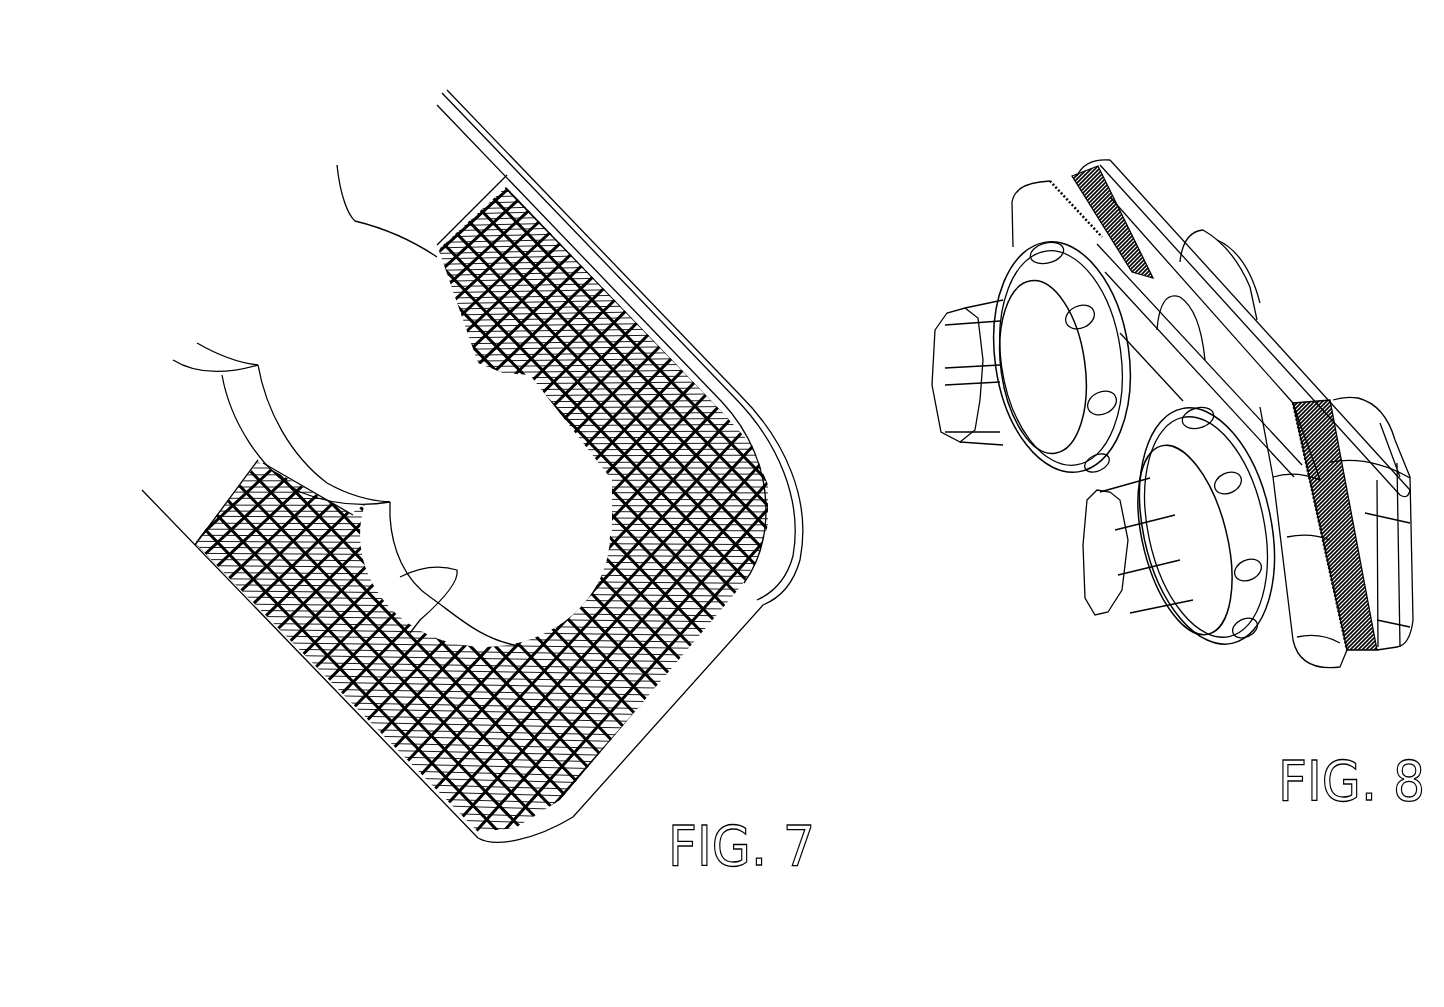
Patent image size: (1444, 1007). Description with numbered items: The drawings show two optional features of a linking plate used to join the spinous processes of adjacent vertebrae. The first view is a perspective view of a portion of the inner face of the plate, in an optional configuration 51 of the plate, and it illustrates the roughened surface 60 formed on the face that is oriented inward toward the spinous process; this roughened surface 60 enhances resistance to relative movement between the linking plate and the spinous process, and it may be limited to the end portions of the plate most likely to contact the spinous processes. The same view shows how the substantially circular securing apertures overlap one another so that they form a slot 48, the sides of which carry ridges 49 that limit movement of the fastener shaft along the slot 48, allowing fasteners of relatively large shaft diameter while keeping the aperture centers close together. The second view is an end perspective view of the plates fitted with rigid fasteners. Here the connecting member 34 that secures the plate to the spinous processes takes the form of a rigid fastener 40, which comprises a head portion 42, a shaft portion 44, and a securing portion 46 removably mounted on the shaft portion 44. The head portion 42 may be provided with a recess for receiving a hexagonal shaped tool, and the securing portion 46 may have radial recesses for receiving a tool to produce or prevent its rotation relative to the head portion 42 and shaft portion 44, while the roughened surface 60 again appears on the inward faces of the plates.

In FIG. 8, the connecting member 34 is at (1106, 389).
In FIG. 8, the rigid fastener 40 is at (1228, 205).
In FIG. 8, the head portion 42 is at (1222, 275).
In FIG. 8, the shaft portion 44 is at (960, 400).
In FIG. 8, the securing portion 46 is at (1080, 458).
In FIG. 7, the slot 48 is at (333, 735).
In FIG. 7, the ridges 49 is at (357, 513).
In FIG. 7, the optional configuration of the linking plate 51 is at (458, 170).
In FIG. 7, the roughened surface 60 is at (750, 608).
In FIG. 8, the roughened surface 60 is at (1080, 167).